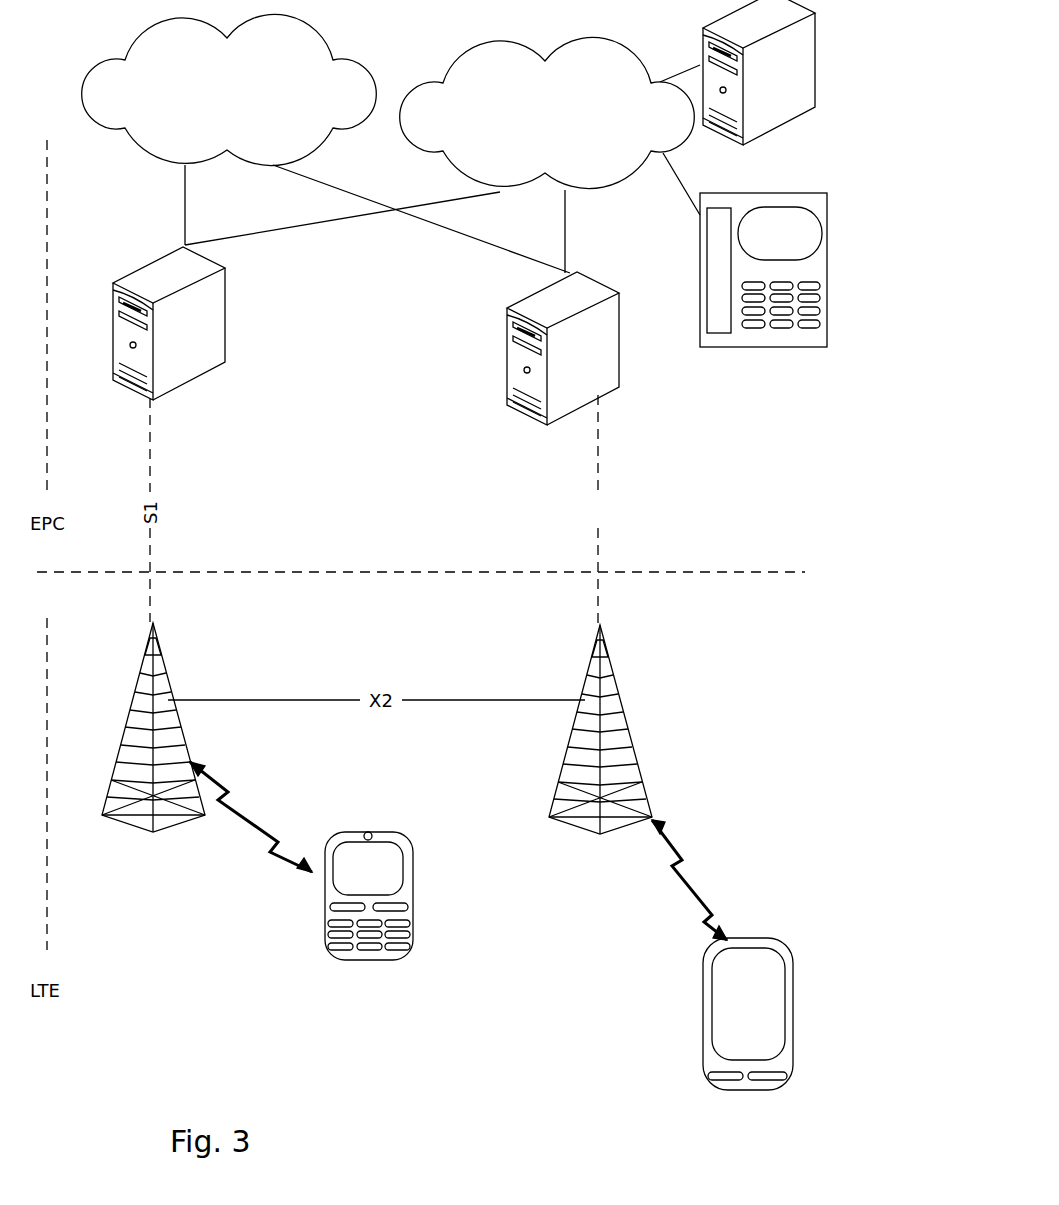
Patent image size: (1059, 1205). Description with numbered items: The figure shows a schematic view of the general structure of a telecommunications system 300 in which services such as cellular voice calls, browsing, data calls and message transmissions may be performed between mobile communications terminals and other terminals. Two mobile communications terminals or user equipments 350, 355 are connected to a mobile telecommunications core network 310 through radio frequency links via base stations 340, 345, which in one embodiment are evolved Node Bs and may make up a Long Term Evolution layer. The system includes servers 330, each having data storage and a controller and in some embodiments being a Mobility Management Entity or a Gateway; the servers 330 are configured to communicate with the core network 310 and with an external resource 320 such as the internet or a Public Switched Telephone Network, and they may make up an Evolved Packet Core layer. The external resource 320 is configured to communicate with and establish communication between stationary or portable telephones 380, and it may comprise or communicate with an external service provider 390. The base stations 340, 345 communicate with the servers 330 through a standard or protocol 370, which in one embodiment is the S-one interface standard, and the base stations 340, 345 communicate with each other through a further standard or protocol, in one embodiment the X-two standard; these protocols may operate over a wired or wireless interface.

The telecommunications system 300 is at (683, 553).
The mobile telecommunications core network 310 is at (211, 78).
The external resource 320 is at (529, 88).
The server 330 is at (228, 348).
The base station 340 is at (600, 834).
The base station 345 is at (152, 833).
The mobile communications terminal 350 is at (750, 1091).
The mobile communications terminal 355 is at (368, 961).
The standard or protocol 370 is at (563, 473).
The telephone 380 is at (700, 279).
The external service provider 390 is at (765, 125).